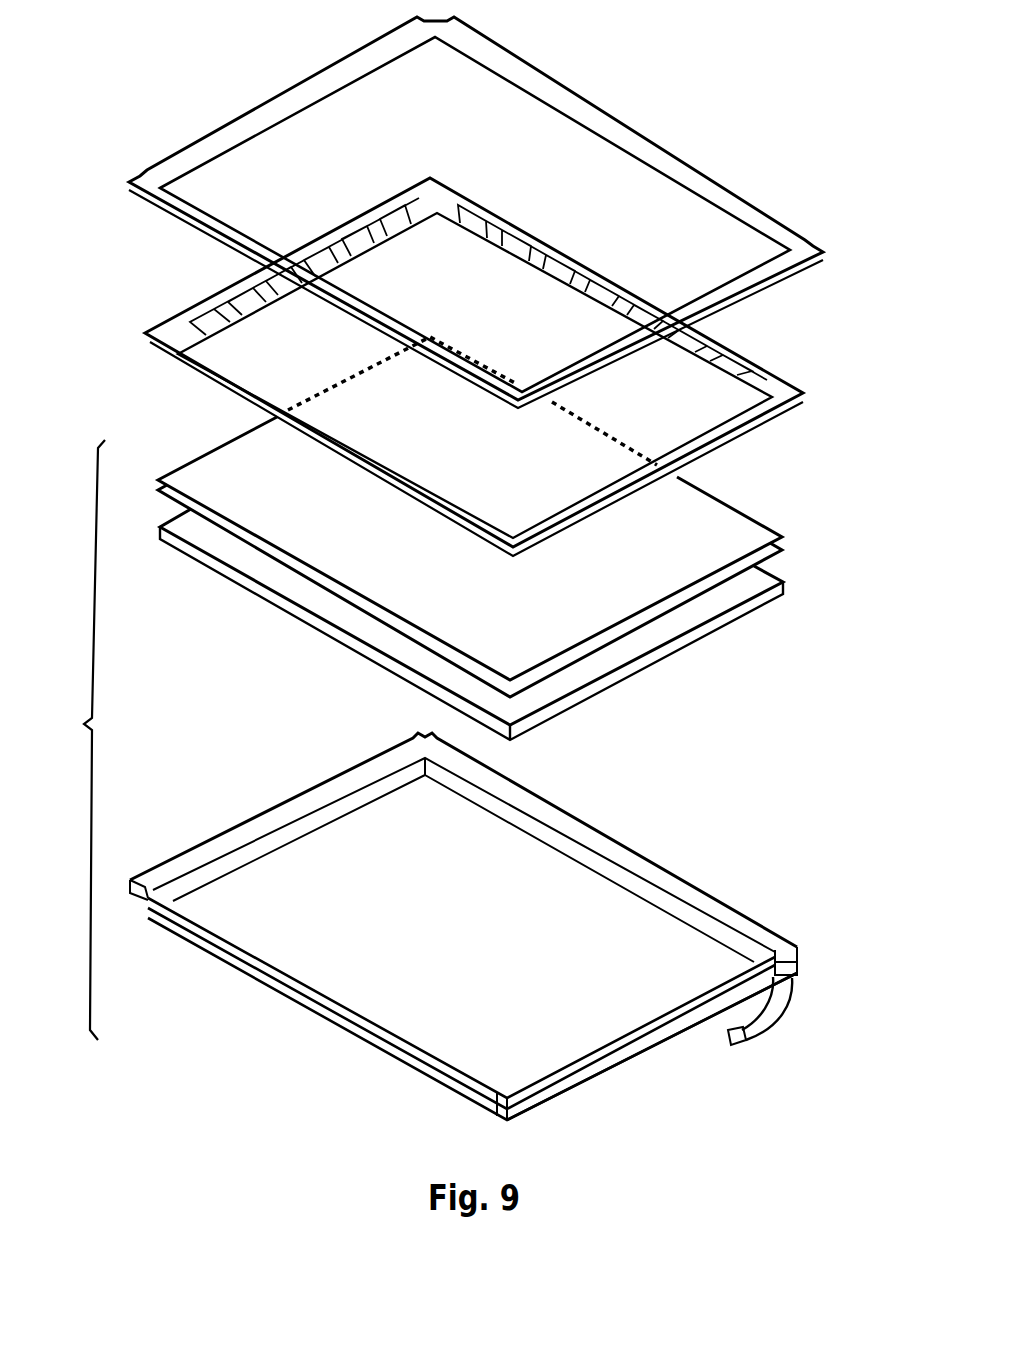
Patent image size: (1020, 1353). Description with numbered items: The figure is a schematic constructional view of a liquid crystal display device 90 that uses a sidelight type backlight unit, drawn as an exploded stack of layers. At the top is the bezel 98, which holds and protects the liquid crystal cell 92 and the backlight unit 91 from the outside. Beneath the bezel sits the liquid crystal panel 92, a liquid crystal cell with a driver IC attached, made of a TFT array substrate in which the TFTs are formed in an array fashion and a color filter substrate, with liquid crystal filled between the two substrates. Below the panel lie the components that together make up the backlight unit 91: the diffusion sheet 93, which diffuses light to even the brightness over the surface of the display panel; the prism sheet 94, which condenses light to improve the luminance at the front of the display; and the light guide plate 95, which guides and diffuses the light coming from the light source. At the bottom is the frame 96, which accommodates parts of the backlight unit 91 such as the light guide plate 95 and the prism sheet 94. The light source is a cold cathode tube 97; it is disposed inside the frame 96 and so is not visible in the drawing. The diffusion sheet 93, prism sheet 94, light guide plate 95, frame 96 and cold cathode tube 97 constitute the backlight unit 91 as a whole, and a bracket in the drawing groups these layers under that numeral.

The liquid crystal display device 90 is at (645, 74).
The backlight unit 91 is at (76, 740).
The liquid crystal panel 92 is at (762, 368).
The diffusion sheet 93 is at (768, 523).
The prism sheet 94 is at (777, 557).
The light guide plate 95 is at (755, 603).
The frame 96 is at (620, 1040).
The cold cathode tube 97 is at (750, 913).
The bezel 98 is at (768, 203).